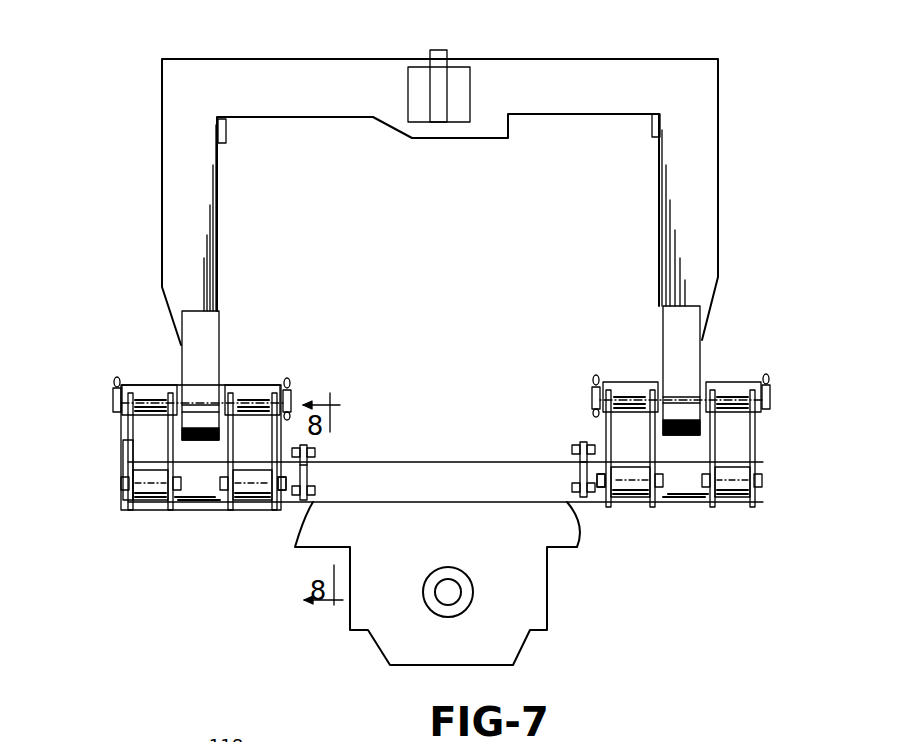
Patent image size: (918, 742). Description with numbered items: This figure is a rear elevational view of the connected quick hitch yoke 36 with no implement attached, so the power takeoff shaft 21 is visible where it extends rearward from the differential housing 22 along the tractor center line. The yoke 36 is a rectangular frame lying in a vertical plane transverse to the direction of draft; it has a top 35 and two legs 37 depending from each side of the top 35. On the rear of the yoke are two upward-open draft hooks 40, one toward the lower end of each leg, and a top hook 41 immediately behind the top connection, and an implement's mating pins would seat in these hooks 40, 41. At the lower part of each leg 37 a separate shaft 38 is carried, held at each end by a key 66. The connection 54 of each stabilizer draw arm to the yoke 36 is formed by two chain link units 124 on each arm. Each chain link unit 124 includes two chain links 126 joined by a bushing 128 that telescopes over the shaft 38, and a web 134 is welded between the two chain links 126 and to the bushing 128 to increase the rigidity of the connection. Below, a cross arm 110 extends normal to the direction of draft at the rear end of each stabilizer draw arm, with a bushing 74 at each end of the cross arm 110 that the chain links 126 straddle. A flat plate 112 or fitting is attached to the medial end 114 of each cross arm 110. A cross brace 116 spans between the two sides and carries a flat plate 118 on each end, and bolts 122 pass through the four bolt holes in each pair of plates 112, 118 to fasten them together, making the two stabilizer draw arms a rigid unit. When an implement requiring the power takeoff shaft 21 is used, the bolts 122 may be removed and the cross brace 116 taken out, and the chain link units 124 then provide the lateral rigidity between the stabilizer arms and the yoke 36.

The power takeoff shaft 21 is at (460, 585).
The differential housing 22 is at (420, 550).
The top of yoke 35 is at (546, 70).
The quick hitch yoke 36 is at (307, 97).
The legs 37 is at (162, 155).
The shaft 38 is at (113, 403).
The draft hooks 40 is at (215, 338).
The top hook 41 is at (430, 67).
The connection 54 is at (113, 443).
The key 66 is at (118, 386).
The bushing 74 is at (252, 500).
The cross arm 110 is at (196, 503).
The flat plate 112 is at (290, 483).
The medial end of cross arm 114 is at (603, 500).
The cross brace 116 is at (462, 492).
The flat plate 118 is at (309, 468).
The bolts 122 is at (315, 452).
The chain link unit 124 is at (150, 520).
The chain links 126 is at (124, 455).
The bushing 128 is at (160, 384).
The web 134 is at (236, 429).